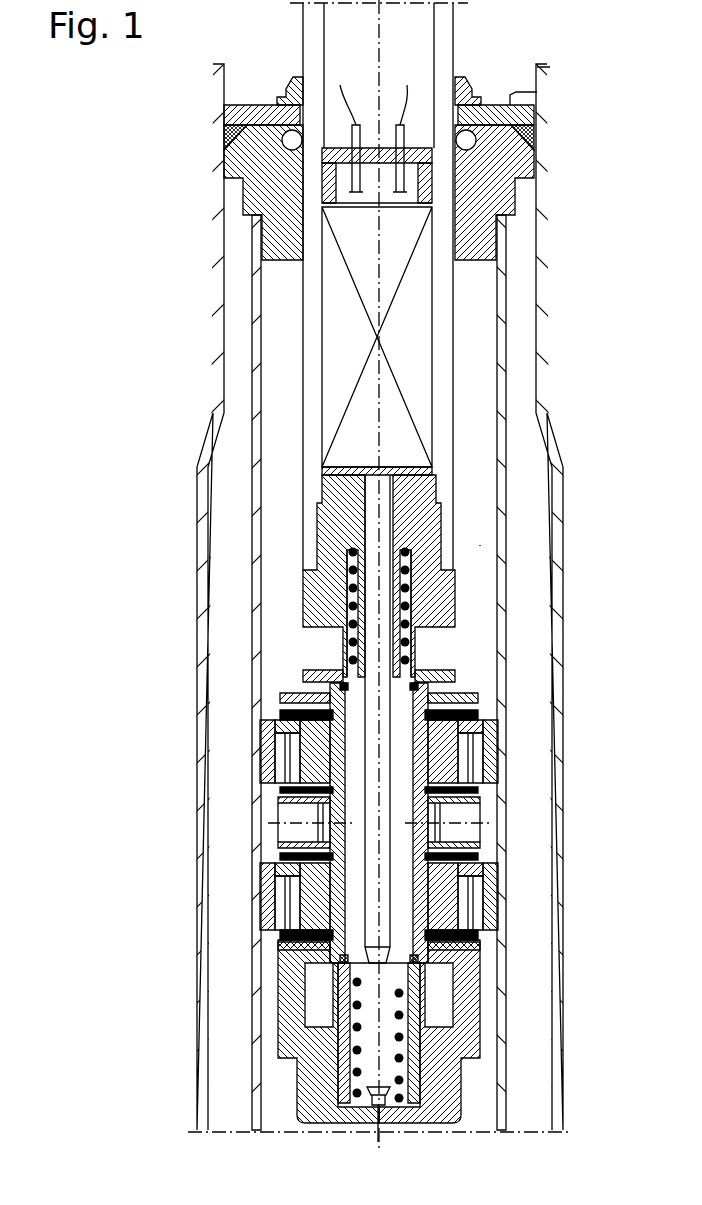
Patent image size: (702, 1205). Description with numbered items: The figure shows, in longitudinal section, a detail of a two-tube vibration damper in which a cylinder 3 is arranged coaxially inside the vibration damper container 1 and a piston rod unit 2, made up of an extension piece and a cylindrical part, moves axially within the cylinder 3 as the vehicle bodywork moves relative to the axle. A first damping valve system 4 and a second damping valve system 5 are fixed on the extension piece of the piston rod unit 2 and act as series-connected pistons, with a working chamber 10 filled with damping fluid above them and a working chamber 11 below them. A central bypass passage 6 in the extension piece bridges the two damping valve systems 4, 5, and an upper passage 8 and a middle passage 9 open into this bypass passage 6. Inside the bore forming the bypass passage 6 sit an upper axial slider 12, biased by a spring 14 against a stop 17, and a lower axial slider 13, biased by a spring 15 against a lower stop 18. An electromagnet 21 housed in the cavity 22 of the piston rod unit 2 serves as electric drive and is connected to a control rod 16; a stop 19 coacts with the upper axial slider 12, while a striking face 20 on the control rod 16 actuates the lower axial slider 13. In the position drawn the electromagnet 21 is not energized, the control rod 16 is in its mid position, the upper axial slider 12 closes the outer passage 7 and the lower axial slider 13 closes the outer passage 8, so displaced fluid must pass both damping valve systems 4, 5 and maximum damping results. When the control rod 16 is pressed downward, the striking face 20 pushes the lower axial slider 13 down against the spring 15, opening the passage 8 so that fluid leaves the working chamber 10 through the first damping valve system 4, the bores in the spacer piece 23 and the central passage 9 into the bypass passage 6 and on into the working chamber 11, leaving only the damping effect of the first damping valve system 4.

The vibration damper container 1 is at (542, 342).
The piston rod unit 2 is at (420, 490).
The cylinder 3 is at (500, 318).
The first damping valve system 4 is at (447, 740).
The second damping valve system 5 is at (450, 880).
The bypass passage 6 is at (353, 882).
The outer passage 7 is at (320, 637).
The upper passage 8 is at (417, 1007).
The middle passage 9 is at (420, 830).
The working chamber 10 is at (480, 545).
The working chamber 11 is at (480, 1087).
The upper axial slider 12 is at (408, 632).
The lower axial slider 13 is at (347, 1002).
The spring 14 is at (405, 593).
The spring 15 is at (362, 1087).
The control rod 16 is at (372, 797).
The stop 17 is at (440, 688).
The lower stop 18 is at (420, 962).
The stop 19 is at (318, 682).
The striking face 20 is at (363, 950).
The electromagnet 21 is at (418, 290).
The cavity 22 is at (410, 47).
The spacer piece 23 is at (483, 801).